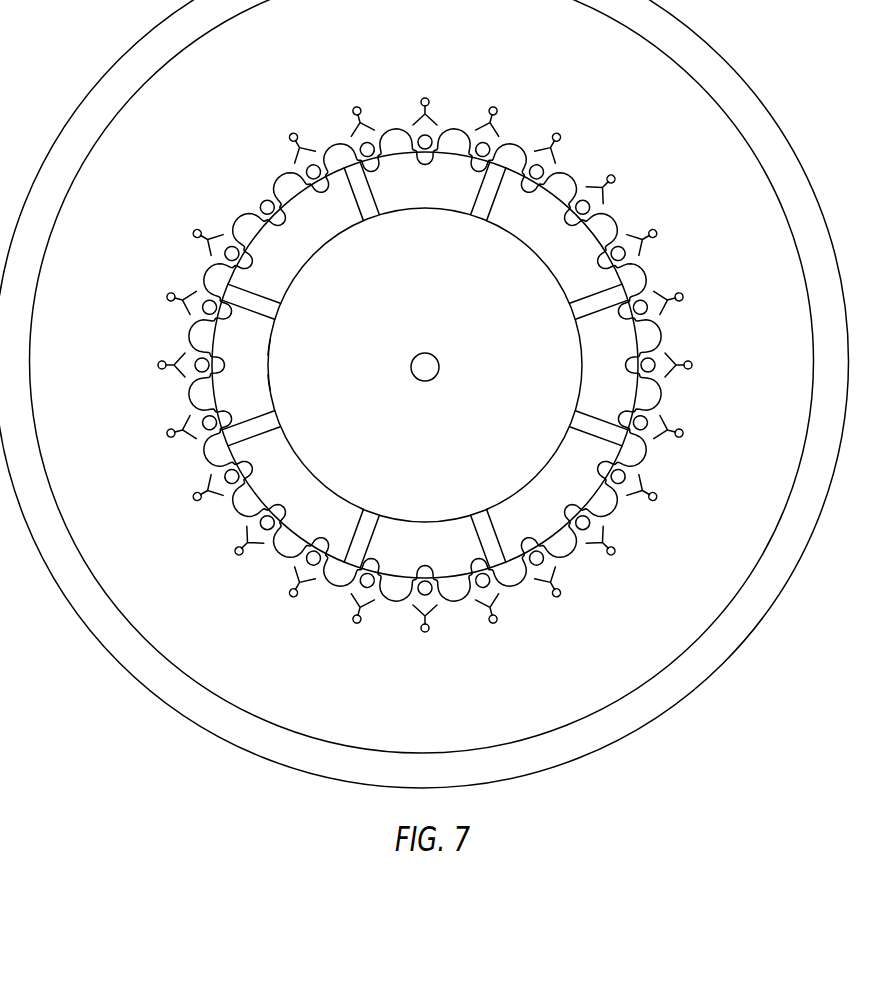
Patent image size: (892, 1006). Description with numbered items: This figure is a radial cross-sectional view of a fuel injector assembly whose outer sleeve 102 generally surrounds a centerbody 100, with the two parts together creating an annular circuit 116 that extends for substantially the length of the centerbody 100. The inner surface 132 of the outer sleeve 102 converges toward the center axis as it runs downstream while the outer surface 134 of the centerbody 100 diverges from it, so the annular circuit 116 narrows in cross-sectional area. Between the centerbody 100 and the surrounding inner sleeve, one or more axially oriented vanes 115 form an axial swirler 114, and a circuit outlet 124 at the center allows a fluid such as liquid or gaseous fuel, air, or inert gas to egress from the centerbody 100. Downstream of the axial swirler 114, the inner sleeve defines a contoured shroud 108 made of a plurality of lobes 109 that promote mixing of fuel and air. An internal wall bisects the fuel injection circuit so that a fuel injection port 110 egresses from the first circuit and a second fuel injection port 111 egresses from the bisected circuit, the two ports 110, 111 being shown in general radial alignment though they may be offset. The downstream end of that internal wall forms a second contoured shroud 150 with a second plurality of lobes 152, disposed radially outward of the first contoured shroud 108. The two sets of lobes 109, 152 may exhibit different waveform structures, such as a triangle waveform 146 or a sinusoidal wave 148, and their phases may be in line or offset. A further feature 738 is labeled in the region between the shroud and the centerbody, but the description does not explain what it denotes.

The centerbody 100 is at (430, 295).
The outer sleeve 102 is at (124, 356).
The contoured shroud 108 is at (520, 142).
The lobes 109 is at (458, 127).
The fuel injection port 110 is at (366, 106).
The second fuel injection port 111 is at (290, 141).
The axial swirler 114 is at (640, 282).
The axially oriented vane 115 is at (588, 298).
The annular circuit 116 is at (333, 521).
The circuit outlet 124 is at (423, 381).
The inner surface of the outer sleeve 132 is at (272, 376).
The outer surface of the centerbody 134 is at (268, 350).
The triangle waveform 146 is at (168, 370).
The sinusoidal wave 148 is at (204, 456).
The second contoured shroud 150 is at (608, 190).
The second plurality of lobes 152 is at (200, 236).
The slot 738 is at (308, 220).